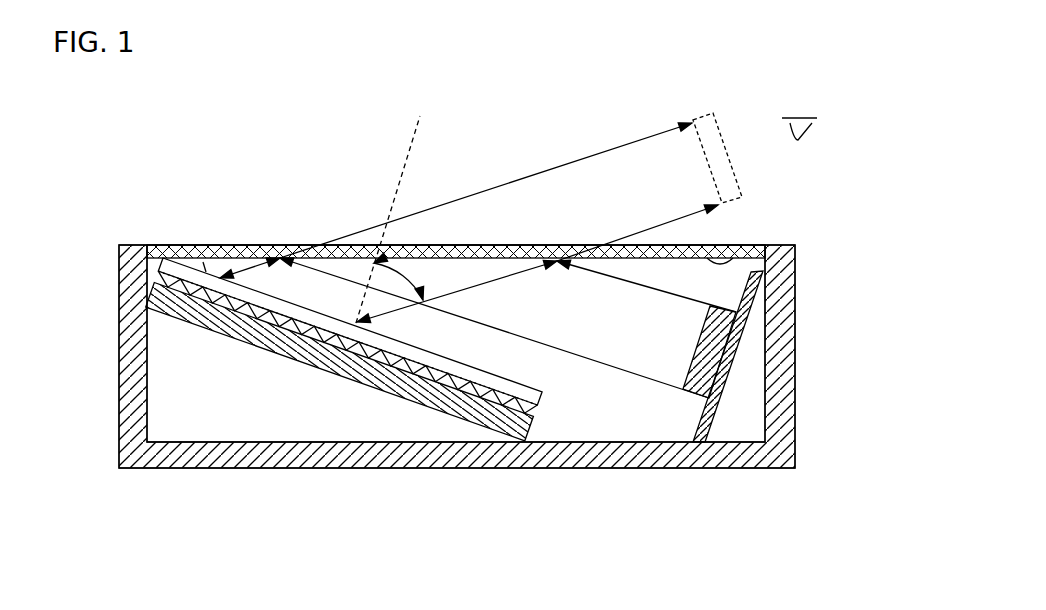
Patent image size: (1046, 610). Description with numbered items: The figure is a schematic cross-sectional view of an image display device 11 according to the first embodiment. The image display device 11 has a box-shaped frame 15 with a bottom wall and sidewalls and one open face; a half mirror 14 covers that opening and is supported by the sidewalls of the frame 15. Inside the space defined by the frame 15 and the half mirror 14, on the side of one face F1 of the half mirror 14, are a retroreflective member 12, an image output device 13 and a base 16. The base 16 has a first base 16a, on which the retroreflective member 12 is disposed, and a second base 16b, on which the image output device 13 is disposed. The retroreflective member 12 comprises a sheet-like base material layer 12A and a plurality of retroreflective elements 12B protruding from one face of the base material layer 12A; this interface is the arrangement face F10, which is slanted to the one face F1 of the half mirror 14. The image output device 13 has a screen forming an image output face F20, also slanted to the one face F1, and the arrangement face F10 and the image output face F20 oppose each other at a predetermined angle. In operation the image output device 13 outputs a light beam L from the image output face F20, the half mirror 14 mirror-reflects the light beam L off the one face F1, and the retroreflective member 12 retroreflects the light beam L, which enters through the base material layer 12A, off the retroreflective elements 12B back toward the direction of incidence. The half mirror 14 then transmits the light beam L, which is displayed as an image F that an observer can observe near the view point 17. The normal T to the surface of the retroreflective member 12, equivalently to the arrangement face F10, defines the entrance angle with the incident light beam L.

The image display device 11 is at (258, 150).
The retroreflective member 12 is at (393, 349).
The base material layer 12A is at (380, 335).
The retroreflective elements 12B is at (534, 410).
The image output device 13 is at (722, 335).
The half mirror 14 is at (163, 255).
The frame 15 is at (122, 358).
The base 16 is at (615, 487).
The first base 16a is at (533, 428).
The second base 16b is at (697, 430).
The view point 17 is at (802, 113).
The image F is at (718, 161).
The one face of the half mirror F1 is at (742, 245).
The arrangement face F10 is at (440, 371).
The image output face F20 is at (697, 348).
The normal T is at (393, 205).
The light beam L is at (647, 287).